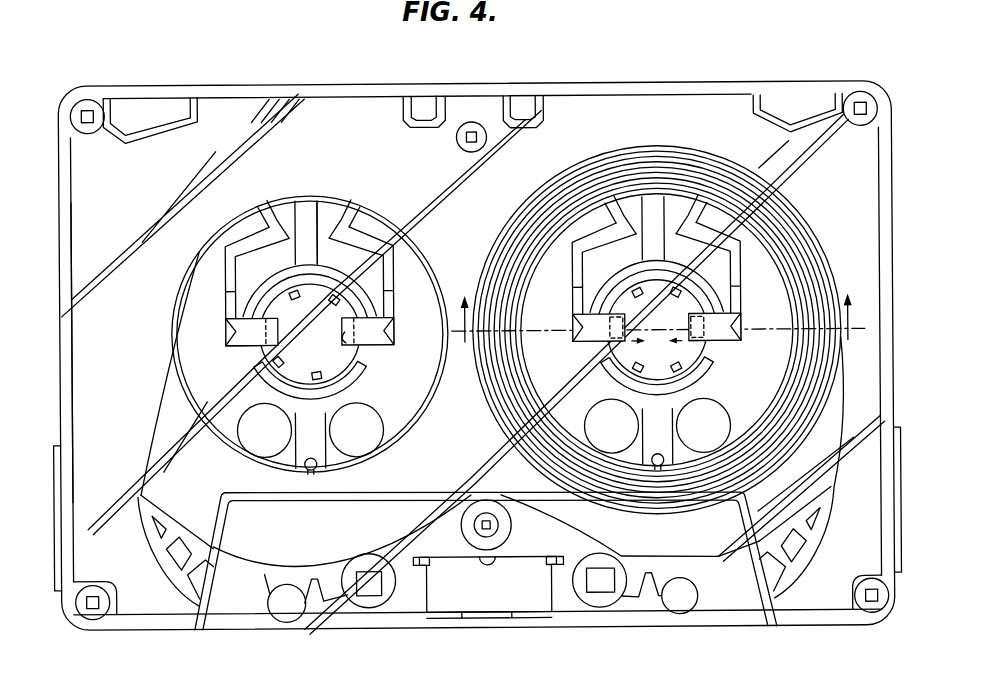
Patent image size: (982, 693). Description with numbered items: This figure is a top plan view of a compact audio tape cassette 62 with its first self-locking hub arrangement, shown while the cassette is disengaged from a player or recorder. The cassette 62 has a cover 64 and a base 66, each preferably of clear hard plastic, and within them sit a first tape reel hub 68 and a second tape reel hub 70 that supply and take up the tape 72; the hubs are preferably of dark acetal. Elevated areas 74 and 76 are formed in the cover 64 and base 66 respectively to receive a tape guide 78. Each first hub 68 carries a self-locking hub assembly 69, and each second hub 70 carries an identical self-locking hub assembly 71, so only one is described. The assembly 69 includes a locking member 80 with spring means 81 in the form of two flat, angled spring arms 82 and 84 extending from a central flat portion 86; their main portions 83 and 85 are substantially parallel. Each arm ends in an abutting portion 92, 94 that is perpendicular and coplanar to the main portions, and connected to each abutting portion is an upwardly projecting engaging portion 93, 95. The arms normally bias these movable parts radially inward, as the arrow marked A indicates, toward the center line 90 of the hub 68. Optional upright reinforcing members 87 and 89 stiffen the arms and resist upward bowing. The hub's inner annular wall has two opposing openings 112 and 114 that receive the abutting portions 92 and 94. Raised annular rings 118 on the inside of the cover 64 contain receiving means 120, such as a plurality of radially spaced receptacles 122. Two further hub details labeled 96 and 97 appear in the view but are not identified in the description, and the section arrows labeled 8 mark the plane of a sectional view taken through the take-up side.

The section line 8- 8 is at (657, 305).
The tape cassette 62 is at (588, 119).
The cover 64 is at (83, 348).
The base 66 is at (158, 600).
The first tape reel hub 68 is at (320, 334).
The self-locking hub assembly 69 is at (320, 293).
The second tape reel hub 70 is at (669, 329).
The self-locking hub assembly 71 is at (668, 306).
The tape 72 is at (838, 345).
The elevated area 74 is at (747, 617).
The elevated area 76 is at (232, 617).
The tape guide 78 is at (633, 596).
The locking member 80 is at (341, 215).
The spring means 81 is at (396, 279).
The spring arm 82 is at (362, 208).
The main portion 83 is at (372, 277).
The spring arm 84 is at (226, 279).
The main portion 85 is at (210, 286).
The central, flat portion 86 is at (263, 201).
The reinforcing member 87 is at (404, 298).
The reinforcing member 89 is at (208, 319).
The center line 90 is at (648, 309).
The abutting portion 92 is at (325, 346).
The engaging portion 93 is at (383, 330).
The abutting portion 94 is at (298, 319).
The engaging portion 95 is at (234, 342).
The top slot 96 is at (296, 212).
The inner arm 97 is at (262, 278).
The opening 112 is at (399, 361).
The opening 114 is at (214, 376).
The raised annular rings 118 is at (484, 434).
The receiving means 120 is at (686, 372).
The receptacles 122 is at (331, 380).